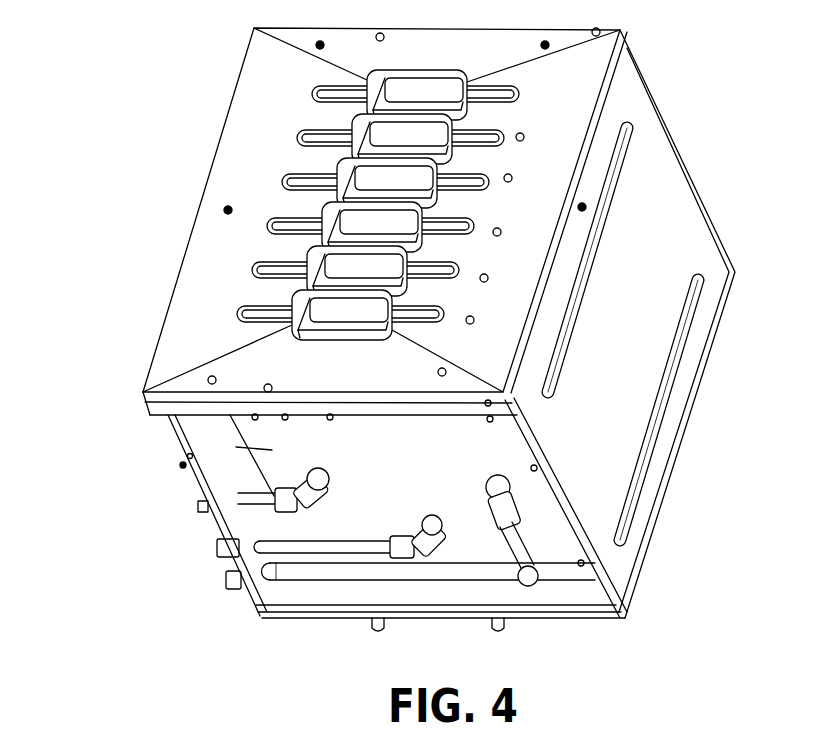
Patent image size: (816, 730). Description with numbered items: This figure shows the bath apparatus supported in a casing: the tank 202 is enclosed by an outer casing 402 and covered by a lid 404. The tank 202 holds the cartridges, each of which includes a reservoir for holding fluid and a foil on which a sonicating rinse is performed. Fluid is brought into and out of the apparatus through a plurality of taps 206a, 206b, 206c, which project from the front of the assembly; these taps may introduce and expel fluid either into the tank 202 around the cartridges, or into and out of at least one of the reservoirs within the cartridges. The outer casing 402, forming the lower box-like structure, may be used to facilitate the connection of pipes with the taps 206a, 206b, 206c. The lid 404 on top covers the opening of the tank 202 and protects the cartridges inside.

The tank 202 is at (270, 450).
The lid 404 is at (178, 290).
The tap 206a is at (238, 497).
The tap 206b is at (444, 545).
The tap 206c is at (508, 496).
The outer casing 402 is at (258, 610).